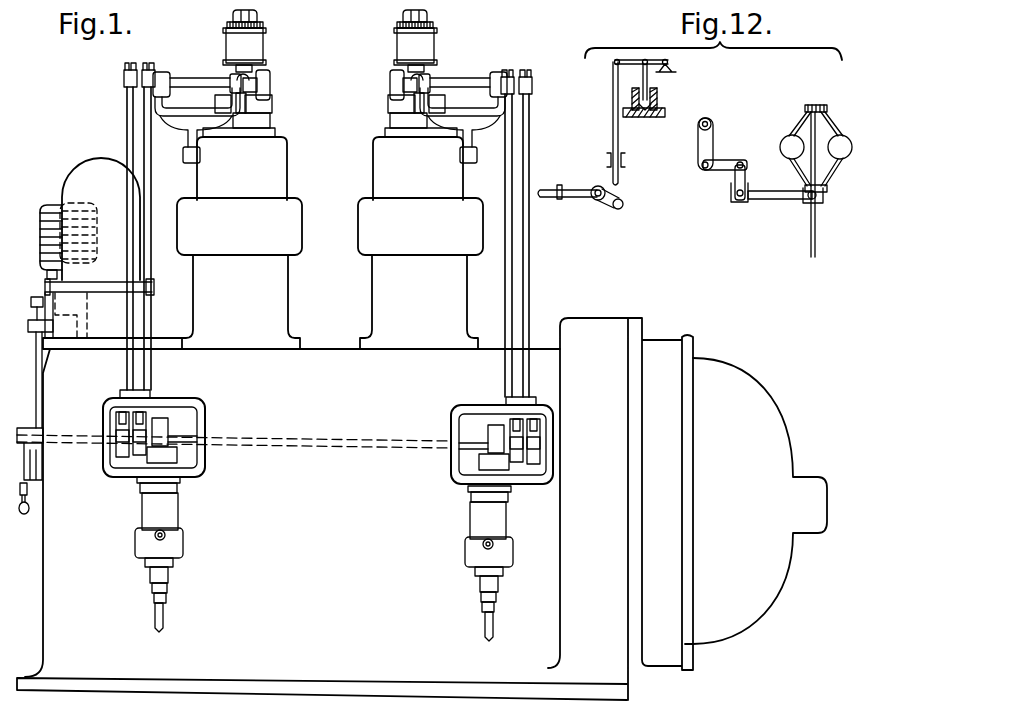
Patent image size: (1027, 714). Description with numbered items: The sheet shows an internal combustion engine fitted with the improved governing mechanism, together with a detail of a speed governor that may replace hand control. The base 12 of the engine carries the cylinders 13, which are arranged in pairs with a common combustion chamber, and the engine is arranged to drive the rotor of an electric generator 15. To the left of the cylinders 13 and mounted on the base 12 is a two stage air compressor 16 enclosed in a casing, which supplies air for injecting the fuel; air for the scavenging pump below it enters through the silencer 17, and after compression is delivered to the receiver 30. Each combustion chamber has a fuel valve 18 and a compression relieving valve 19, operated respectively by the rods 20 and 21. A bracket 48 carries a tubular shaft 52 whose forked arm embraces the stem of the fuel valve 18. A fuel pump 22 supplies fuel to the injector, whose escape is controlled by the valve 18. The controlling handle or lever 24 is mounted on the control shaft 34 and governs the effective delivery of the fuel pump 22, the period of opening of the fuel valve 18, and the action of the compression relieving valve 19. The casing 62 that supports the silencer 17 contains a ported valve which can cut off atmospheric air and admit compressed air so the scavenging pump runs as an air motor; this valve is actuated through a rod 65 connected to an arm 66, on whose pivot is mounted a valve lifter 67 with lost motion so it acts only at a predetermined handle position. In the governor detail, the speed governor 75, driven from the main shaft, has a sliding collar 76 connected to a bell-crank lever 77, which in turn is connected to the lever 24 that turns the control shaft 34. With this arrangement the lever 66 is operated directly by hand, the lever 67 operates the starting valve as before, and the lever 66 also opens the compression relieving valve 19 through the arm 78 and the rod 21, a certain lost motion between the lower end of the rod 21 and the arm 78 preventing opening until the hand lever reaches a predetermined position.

In FIG. 1, the base 12 is at (322, 496).
In FIG. 1, the cylinders 13 is at (378, 160).
In FIG. 1, the electric generator 15 is at (693, 509).
In FIG. 1, the two stage air compressor 16 is at (100, 219).
In FIG. 1, the silencer 17 is at (43, 210).
In FIG. 1, the fuel valve 18 is at (238, 108).
In FIG. 1, the compression relieving valve 19 is at (258, 110).
In FIG. 12, the compression relieving valve 19 is at (660, 97).
In FIG. 1, the rod 20 is at (150, 318).
In FIG. 1, the rod 21 is at (125, 318).
In FIG. 12, the rod 21 is at (620, 145).
In FIG. 1, the fuel pump 22 is at (328, 515).
In FIG. 1, the controlling handle or lever 24 is at (32, 500).
In FIG. 12, the controlling handle or lever 24 is at (713, 143).
In FIG. 1, the receiver 30 is at (353, 238).
In FIG. 1, the control shaft 34 is at (322, 428).
In FIG. 12, the control shaft 34 is at (711, 123).
In FIG. 1, the bracket 48 is at (160, 105).
In FIG. 1, the tubular shaft 52 is at (200, 68).
In FIG. 1, the casing 62 is at (50, 277).
In FIG. 1, the rod 65 is at (40, 412).
In FIG. 12, the arm 66 is at (575, 198).
In FIG. 12, the valve lifter 67 is at (603, 205).
In FIG. 12, the speed governor 75 is at (812, 178).
In FIG. 12, the sliding collar 76 is at (828, 200).
In FIG. 12, the bell-crank lever 77 is at (778, 196).
In FIG. 12, the arm 78 is at (613, 192).